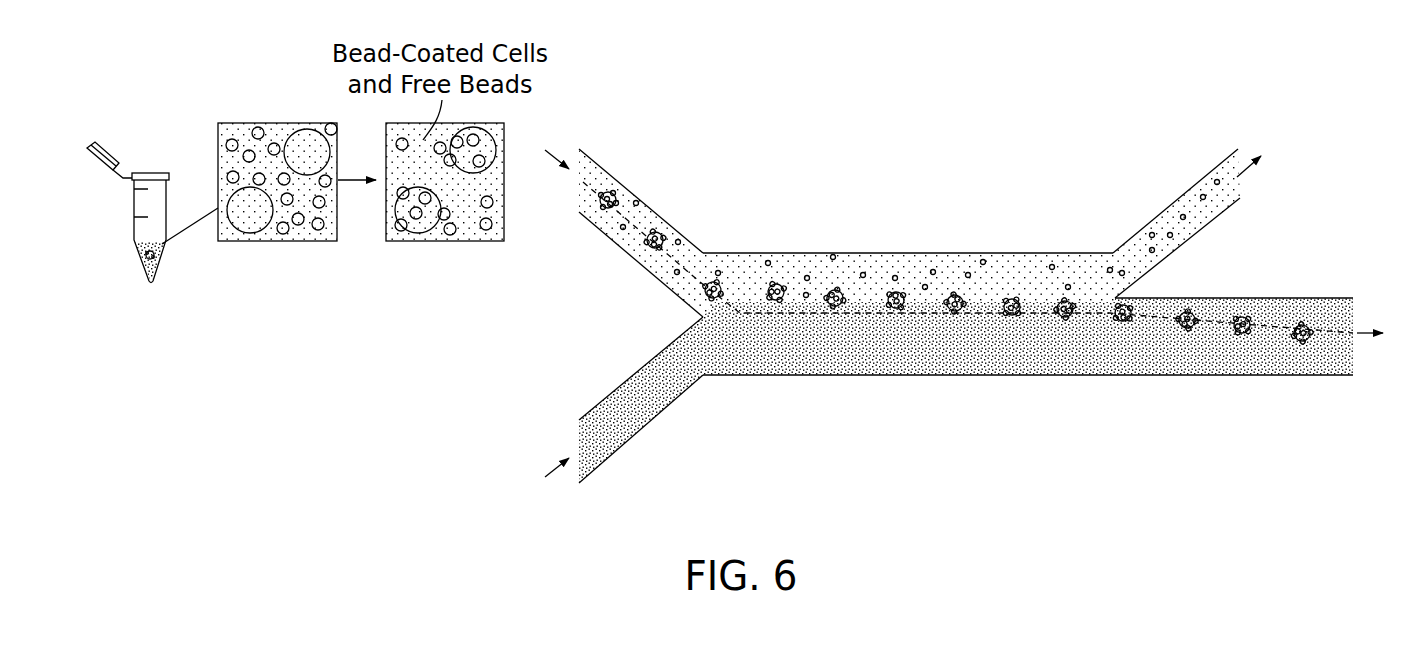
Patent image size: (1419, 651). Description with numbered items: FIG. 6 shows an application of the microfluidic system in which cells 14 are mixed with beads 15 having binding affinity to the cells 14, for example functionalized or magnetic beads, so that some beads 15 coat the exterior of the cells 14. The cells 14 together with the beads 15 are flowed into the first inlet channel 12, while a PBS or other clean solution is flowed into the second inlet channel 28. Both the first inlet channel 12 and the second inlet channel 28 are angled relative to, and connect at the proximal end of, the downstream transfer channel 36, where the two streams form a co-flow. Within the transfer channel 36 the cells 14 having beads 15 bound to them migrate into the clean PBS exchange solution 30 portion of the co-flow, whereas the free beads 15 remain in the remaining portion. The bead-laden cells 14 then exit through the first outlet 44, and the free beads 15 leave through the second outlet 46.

The first inlet channel 12 is at (620, 182).
The cells 14 is at (253, 225).
The beads 15 is at (318, 230).
The second inlet channel 28 is at (665, 407).
The exchange solution 30 is at (963, 365).
The transfer channel 36 is at (873, 365).
The first outlet 44 is at (1247, 375).
The second outlet 46 is at (1225, 160).